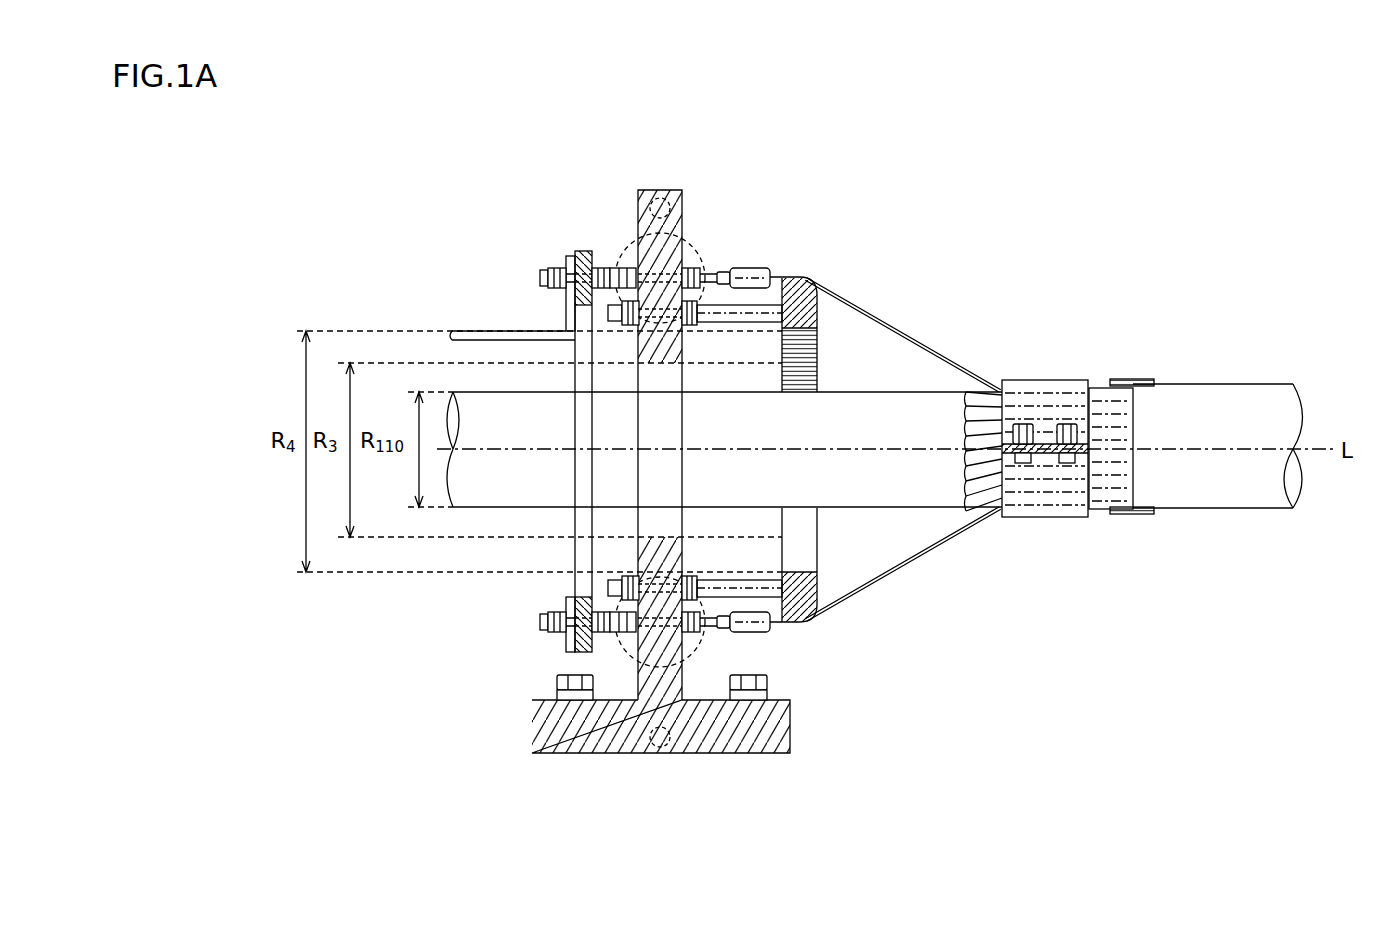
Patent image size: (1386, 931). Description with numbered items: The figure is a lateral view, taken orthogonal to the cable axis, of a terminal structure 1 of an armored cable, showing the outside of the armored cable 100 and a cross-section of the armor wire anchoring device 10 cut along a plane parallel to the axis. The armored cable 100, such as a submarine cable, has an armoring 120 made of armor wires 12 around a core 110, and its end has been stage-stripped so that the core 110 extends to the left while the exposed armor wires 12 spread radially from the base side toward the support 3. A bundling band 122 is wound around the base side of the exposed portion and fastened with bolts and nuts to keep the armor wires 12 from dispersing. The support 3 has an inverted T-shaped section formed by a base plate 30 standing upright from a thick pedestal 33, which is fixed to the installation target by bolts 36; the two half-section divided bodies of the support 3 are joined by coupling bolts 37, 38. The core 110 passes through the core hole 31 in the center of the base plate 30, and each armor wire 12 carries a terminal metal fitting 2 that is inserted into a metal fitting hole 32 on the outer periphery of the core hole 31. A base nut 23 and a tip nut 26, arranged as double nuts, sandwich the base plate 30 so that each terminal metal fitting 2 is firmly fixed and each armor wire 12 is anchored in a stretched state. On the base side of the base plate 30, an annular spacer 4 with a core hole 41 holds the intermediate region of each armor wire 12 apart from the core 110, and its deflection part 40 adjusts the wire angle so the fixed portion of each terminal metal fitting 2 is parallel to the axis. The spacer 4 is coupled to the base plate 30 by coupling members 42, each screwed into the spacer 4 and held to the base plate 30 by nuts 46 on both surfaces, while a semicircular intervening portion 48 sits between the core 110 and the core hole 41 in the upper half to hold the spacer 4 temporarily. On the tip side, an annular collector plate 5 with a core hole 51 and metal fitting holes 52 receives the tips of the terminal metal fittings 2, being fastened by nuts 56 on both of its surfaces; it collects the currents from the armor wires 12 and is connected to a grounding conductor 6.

The terminal structure of an armored cable 1 is at (393, 207).
The terminal metal fitting 2 is at (778, 268).
The support 3 is at (590, 765).
The spacer 4 is at (828, 312).
The collector plate 5 is at (583, 242).
The grounding conductor 6 is at (490, 331).
The armor wire anchoring device 10 is at (746, 246).
The armor wire 12 is at (906, 335).
The base nut 23 is at (700, 268).
The tip nut 26 is at (624, 268).
The base plate 30 is at (645, 190).
The core hole 31 is at (655, 545).
The metal fitting hole 32 is at (690, 268).
The pedestal 33 is at (788, 710).
The bolt 36 is at (557, 685).
The coupling bolt 37 is at (654, 200).
The coupling bolt 38 is at (661, 747).
The deflection part 40 is at (828, 306).
The core hole 41 is at (803, 570).
The coupling member 42 is at (753, 323).
The nut 46 is at (630, 325).
The intervening portion 48 is at (812, 365).
The core hole 51 is at (577, 594).
The metal fitting hole 52 is at (585, 280).
The nut 56 is at (548, 268).
The armored cable 100 is at (1254, 522).
The core 110 is at (481, 498).
The armoring 120 is at (1111, 524).
The bundling band 122 is at (1045, 385).